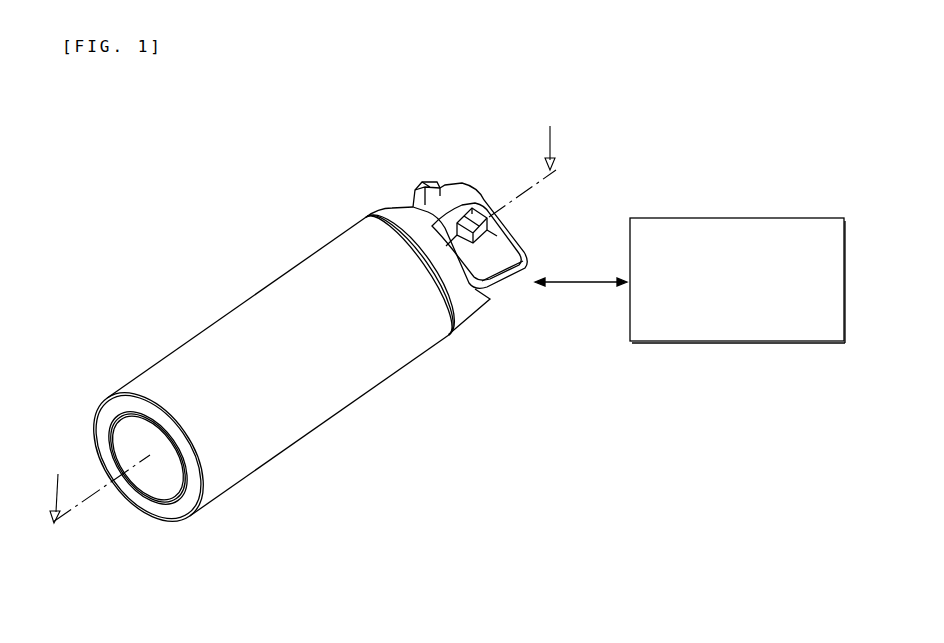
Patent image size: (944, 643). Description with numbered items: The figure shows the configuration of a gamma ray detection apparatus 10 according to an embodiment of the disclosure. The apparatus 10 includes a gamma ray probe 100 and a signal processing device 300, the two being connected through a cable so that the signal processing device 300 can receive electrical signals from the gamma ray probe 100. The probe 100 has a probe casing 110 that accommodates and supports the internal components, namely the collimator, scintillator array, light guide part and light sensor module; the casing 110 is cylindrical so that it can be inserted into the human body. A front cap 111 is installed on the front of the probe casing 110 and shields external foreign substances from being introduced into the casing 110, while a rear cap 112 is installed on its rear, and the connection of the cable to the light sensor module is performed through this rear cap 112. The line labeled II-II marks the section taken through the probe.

The gamma ray detection apparatus 10 is at (442, 107).
The gamma ray probe 100 is at (288, 251).
The probe casing 110 is at (333, 407).
The front cap 111 is at (164, 491).
The rear cap 112 is at (521, 239).
The signal processing device 300 is at (738, 217).